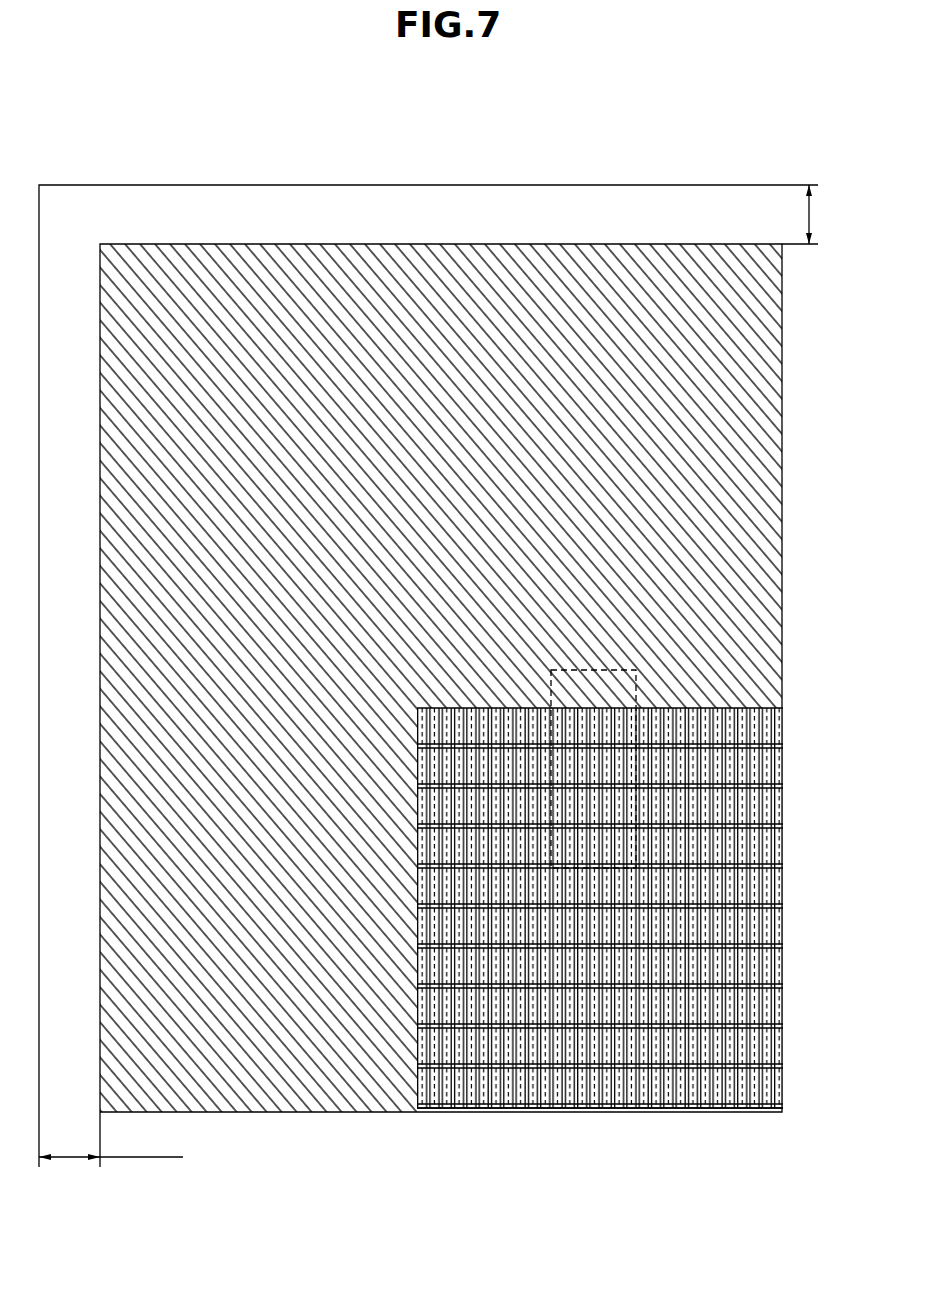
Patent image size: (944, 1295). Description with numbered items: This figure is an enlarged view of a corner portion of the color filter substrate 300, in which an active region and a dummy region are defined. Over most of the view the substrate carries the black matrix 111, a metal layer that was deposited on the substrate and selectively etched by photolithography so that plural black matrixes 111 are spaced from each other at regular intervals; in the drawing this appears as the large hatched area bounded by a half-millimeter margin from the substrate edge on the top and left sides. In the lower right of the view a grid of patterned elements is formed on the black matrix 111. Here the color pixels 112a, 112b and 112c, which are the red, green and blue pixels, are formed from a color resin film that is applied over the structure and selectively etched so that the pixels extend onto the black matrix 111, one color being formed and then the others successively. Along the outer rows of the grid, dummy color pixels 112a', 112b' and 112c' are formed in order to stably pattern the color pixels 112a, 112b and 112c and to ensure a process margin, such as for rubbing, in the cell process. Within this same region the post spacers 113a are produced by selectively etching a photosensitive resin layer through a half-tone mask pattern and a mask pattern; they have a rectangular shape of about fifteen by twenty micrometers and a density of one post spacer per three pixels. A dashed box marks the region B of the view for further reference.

The color filter substrate 300 is at (480, 1165).
The black matrix 111 is at (770, 447).
The region B is at (636, 701).
The post spacers 113a is at (713, 942).
The color pixel 112a is at (646, 889).
The color pixel 112b is at (646, 857).
The color pixel 112c is at (645, 826).
The dummy color pixel 112a' is at (649, 791).
The dummy color pixel 112b' is at (649, 758).
The dummy color pixel 112c' is at (648, 727).